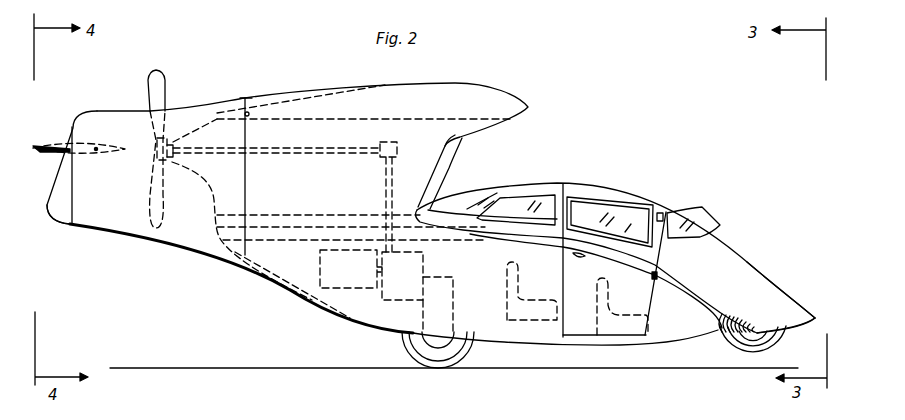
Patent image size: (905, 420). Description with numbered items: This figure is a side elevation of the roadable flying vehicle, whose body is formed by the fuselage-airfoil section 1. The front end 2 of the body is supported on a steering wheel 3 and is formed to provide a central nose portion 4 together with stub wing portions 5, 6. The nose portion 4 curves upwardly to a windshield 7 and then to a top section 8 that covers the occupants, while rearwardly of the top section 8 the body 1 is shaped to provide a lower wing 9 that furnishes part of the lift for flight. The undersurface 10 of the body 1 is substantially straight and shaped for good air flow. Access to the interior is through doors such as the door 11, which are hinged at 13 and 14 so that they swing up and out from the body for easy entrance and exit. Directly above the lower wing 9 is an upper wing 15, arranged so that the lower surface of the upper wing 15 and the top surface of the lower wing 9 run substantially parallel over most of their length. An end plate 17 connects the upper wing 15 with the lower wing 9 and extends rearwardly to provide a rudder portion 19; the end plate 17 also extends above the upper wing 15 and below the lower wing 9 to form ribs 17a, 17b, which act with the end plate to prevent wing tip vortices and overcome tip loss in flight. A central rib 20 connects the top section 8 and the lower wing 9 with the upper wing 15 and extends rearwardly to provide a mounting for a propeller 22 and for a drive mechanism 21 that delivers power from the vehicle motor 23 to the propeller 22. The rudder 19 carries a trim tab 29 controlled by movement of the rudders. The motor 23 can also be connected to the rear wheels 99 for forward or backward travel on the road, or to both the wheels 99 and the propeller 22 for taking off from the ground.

The fuselage-airfoil section 1 is at (486, 275).
The front end 2 is at (729, 231).
The steering wheel 3 is at (742, 360).
The central nose portion 4 is at (790, 293).
The stub wing portion 5 is at (60, 128).
The stub wing portion 6 is at (688, 338).
The windshield 7 is at (690, 214).
The top section 8 is at (556, 184).
The lower wing 9 is at (284, 272).
The undersurface 10 is at (562, 338).
The door 11 is at (588, 333).
The hinge 13 is at (659, 212).
The hinge 14 is at (652, 277).
The upper wing 15 is at (372, 100).
The end plate 17 is at (297, 200).
The rib 17a is at (283, 93).
The rib 17b is at (326, 308).
The rudder portion 19 is at (135, 198).
The central rib 20 is at (458, 143).
The drive mechanism 21 is at (398, 144).
The propeller 22 is at (166, 71).
The vehicle motor 23 is at (300, 296).
The trim tab 29 is at (63, 227).
The rear wheels 99 is at (405, 352).